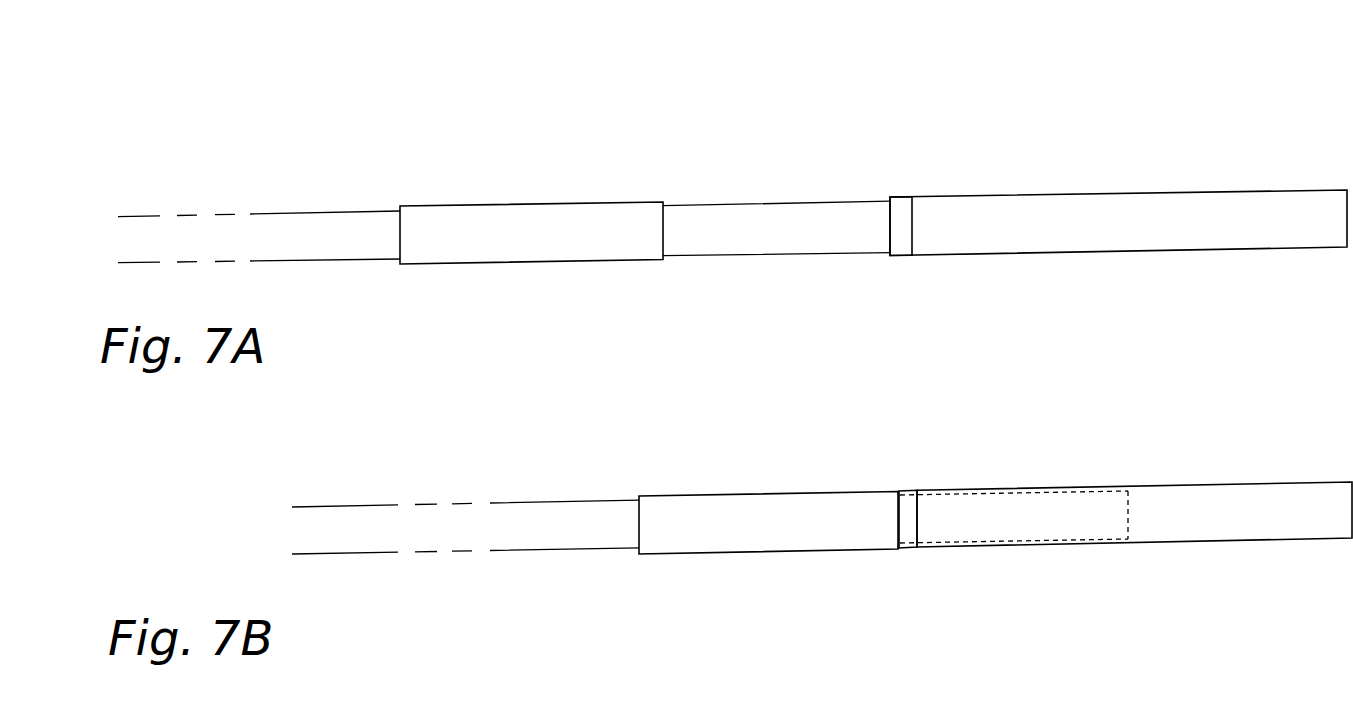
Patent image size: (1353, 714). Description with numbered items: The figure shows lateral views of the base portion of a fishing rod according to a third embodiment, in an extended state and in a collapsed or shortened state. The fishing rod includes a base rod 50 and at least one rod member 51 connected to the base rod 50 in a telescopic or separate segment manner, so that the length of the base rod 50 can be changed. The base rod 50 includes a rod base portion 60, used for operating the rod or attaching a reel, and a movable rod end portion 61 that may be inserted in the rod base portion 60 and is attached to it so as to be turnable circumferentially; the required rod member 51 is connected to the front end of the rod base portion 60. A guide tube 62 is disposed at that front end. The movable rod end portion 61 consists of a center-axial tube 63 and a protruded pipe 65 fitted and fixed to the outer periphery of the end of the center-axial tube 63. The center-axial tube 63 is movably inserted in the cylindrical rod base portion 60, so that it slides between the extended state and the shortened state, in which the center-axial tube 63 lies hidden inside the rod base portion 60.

In FIG. 7A, the base rod 50 is at (1065, 90).
In FIG. 7B, the base rod 50 is at (1063, 410).
In FIG. 7A, the rod member 51 is at (300, 210).
In FIG. 7B, the rod member 51 is at (523, 500).
In FIG. 7A, the rod base portion 60 is at (1115, 193).
In FIG. 7B, the rod base portion 60 is at (1115, 485).
In FIG. 7A, the movable rod end portion 61 is at (560, 200).
In FIG. 7B, the movable rod end portion 61 is at (778, 490).
In FIG. 7A, the guide tube 62 is at (897, 197).
In FIG. 7B, the guide tube 62 is at (917, 488).
In FIG. 7A, the center-axial tube 63 is at (785, 203).
In FIG. 7B, the center-axial tube 63 is at (990, 493).
In FIG. 7A, the protruded pipe 65 is at (460, 203).
In FIG. 7B, the protruded pipe 65 is at (682, 495).